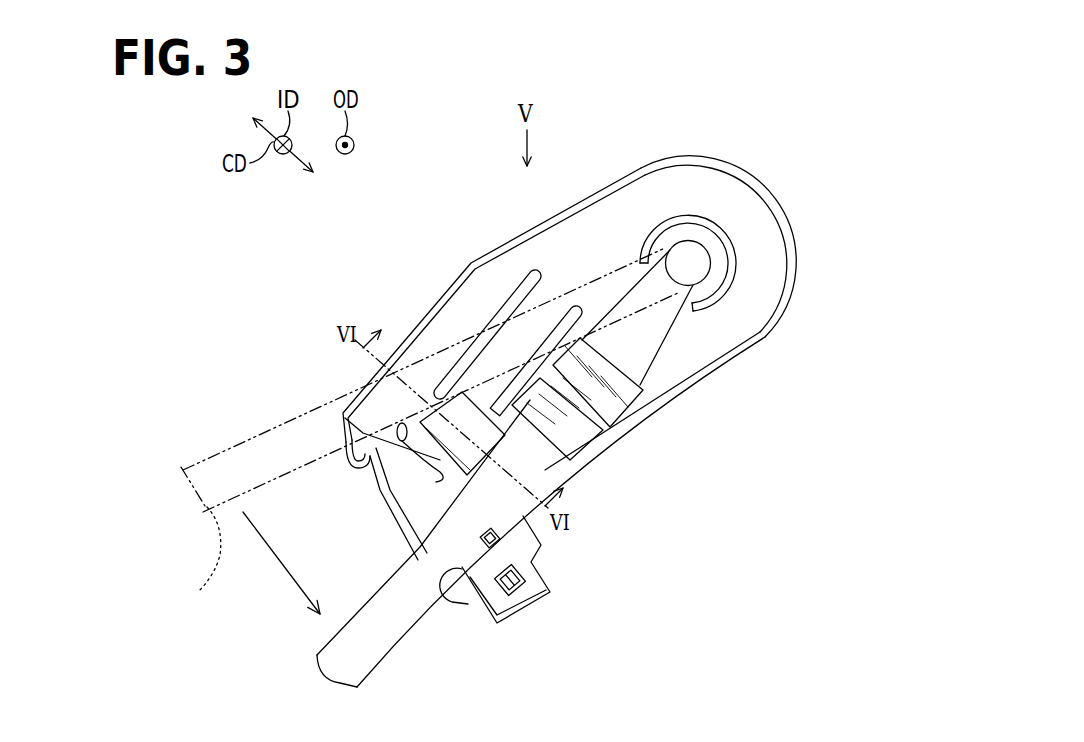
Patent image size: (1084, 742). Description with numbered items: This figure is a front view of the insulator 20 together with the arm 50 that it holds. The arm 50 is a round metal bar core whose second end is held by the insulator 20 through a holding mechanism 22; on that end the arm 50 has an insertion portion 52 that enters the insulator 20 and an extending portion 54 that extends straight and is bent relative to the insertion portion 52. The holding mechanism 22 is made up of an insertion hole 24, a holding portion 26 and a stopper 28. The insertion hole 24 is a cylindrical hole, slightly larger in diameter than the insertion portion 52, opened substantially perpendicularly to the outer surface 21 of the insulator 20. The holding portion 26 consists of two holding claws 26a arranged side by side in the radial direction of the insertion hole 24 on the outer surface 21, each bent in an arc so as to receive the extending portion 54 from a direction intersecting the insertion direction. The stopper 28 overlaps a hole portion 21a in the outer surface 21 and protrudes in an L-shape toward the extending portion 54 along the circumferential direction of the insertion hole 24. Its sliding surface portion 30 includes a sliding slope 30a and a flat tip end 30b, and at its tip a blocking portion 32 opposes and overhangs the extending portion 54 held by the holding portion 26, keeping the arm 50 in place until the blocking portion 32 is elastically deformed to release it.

The insulator 20 is at (573, 390).
The outer surface 21 is at (530, 509).
The hole portion 21a is at (337, 412).
The holding mechanism 22 is at (594, 380).
The insertion hole 24 is at (700, 246).
The holding portion 26 is at (602, 451).
The holding claws 26a is at (680, 512).
The stopper 28 is at (437, 378).
The sliding surface portion 30 is at (461, 335).
The sliding slope 30a is at (480, 370).
The flat tip end 30b is at (430, 383).
The blocking portion 32 is at (472, 492).
The arm 50 is at (333, 648).
The insertion portion 52 is at (712, 267).
The extending portion 54 is at (465, 577).